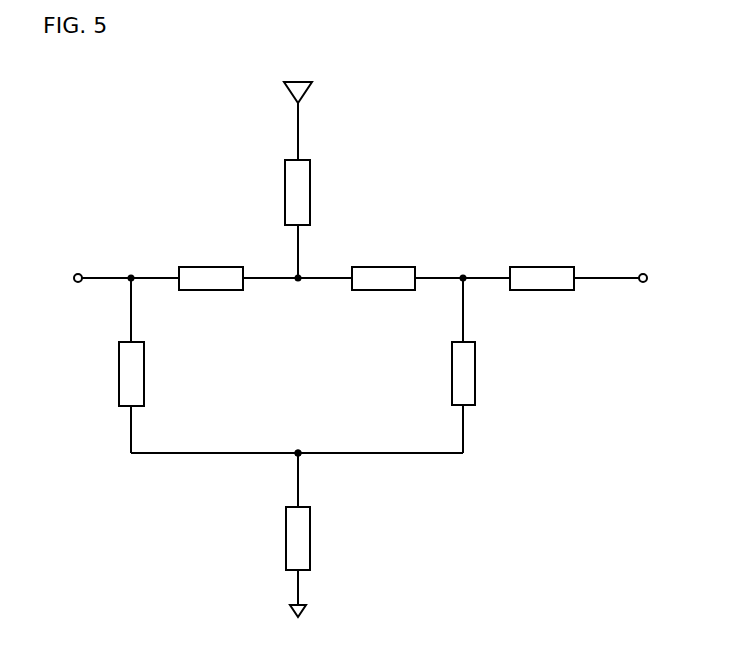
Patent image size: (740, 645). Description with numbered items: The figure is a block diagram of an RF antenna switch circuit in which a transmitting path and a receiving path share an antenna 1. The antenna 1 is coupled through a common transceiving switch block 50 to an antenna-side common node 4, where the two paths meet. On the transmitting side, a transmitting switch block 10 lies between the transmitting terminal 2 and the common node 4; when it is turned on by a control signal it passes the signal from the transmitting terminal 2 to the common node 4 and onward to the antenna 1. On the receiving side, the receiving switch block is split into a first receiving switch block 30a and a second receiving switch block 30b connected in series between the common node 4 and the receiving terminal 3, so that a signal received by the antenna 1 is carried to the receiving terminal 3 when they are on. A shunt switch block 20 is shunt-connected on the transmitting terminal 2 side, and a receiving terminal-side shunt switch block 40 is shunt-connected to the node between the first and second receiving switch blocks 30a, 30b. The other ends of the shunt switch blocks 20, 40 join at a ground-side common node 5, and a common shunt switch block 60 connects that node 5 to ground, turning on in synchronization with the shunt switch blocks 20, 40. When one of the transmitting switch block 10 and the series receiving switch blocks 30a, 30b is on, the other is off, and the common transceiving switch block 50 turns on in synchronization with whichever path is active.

The antenna 1 is at (305, 92).
The transmitting terminal 2 is at (78, 270).
The receiving terminal 3 is at (643, 272).
The antenna-side common node 4 is at (296, 276).
The ground-side common node 5 is at (298, 450).
The transmitting switch block 10 is at (208, 291).
The shunt switch block 20 is at (118, 372).
The first receiving switch block 30a is at (380, 291).
The second receiving switch block 30b is at (542, 291).
The receiving terminal-side shunt switch block 40 is at (476, 385).
The common transceiving switch block 50 is at (311, 192).
The common shunt switch block 60 is at (311, 538).